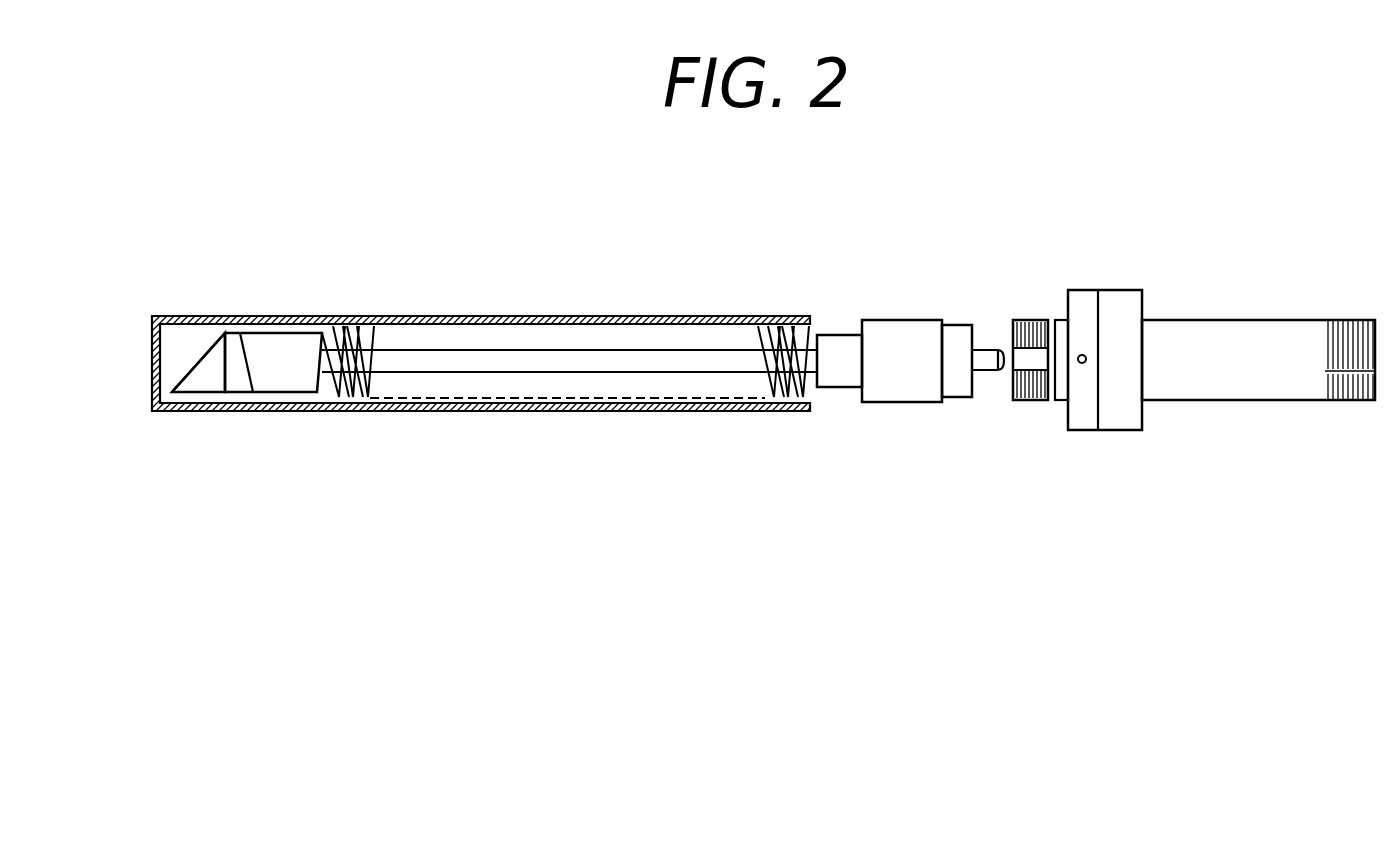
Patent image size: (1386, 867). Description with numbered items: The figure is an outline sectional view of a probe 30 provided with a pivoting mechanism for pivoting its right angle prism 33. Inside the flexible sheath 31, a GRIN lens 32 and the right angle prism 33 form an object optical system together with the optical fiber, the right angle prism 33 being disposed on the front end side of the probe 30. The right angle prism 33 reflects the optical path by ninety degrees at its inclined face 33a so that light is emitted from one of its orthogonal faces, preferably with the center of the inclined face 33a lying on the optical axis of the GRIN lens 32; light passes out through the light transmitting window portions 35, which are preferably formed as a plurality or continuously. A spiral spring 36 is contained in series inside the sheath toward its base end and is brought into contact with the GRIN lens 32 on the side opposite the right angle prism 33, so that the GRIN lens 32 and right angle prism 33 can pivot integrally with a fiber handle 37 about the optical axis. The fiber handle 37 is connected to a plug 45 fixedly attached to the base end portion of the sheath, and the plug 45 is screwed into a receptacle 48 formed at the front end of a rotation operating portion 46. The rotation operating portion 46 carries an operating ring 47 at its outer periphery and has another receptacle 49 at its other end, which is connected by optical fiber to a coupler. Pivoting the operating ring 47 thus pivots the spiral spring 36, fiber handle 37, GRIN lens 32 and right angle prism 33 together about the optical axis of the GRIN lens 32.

The probe 30 is at (628, 300).
The flexible sheath 31 is at (537, 317).
The GRIN lens 32 is at (282, 375).
The right angle prism 33 is at (197, 375).
The inclined face 33a is at (205, 350).
The light transmitting window portion 35 is at (178, 412).
The spiral spring 36 is at (775, 330).
The fiber handle 37 is at (437, 355).
The plug 45 is at (908, 328).
The rotation operating portion 46 is at (1228, 328).
The operating ring 47 is at (1117, 303).
The receptacle 48 is at (1033, 323).
The receptacle 49 is at (1345, 323).